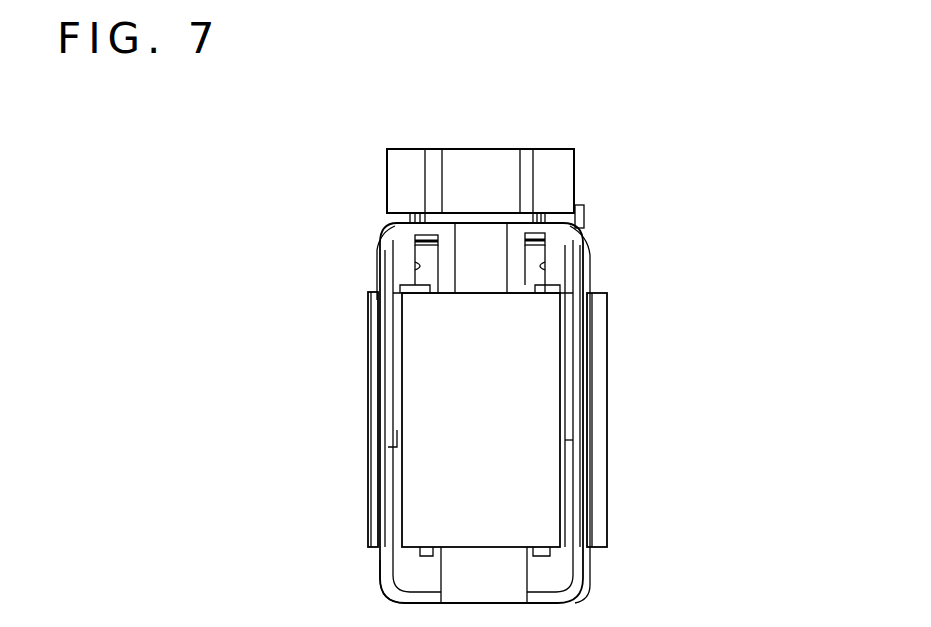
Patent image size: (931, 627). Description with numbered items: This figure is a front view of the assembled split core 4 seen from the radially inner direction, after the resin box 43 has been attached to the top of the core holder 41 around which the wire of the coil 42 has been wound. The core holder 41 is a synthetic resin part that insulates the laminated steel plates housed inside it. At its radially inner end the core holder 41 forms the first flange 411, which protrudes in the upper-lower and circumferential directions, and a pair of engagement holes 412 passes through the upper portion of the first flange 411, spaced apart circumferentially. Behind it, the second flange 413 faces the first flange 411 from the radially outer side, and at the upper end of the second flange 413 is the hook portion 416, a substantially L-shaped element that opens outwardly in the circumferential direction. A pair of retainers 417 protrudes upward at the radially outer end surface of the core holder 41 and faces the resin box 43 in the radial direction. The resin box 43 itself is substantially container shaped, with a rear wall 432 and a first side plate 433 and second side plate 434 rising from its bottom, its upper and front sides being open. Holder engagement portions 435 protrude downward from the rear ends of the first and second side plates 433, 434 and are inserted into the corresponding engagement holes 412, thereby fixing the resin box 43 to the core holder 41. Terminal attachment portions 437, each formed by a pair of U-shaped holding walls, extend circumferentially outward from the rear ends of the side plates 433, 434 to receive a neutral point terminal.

The split core 4 is at (204, 222).
The core holder 41 is at (377, 517).
The first flange 411 is at (555, 587).
The engagement holes 412 is at (400, 265).
The second flange 413 is at (387, 573).
The hook portion 416 is at (584, 215).
The retainers 417 is at (385, 230).
The coil 42 is at (390, 423).
The resin box 43 is at (574, 185).
The rear wall 432 is at (448, 193).
The first side plate 433 is at (425, 170).
The second side plate 434 is at (540, 163).
The holder engagement portions 435 is at (525, 237).
The terminal attachment portions 437 is at (390, 153).